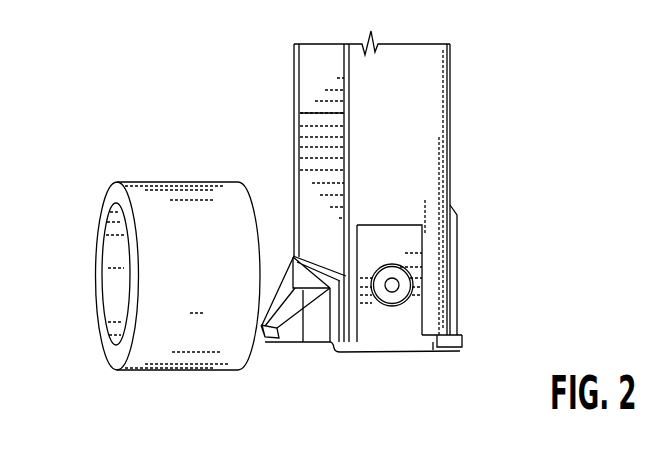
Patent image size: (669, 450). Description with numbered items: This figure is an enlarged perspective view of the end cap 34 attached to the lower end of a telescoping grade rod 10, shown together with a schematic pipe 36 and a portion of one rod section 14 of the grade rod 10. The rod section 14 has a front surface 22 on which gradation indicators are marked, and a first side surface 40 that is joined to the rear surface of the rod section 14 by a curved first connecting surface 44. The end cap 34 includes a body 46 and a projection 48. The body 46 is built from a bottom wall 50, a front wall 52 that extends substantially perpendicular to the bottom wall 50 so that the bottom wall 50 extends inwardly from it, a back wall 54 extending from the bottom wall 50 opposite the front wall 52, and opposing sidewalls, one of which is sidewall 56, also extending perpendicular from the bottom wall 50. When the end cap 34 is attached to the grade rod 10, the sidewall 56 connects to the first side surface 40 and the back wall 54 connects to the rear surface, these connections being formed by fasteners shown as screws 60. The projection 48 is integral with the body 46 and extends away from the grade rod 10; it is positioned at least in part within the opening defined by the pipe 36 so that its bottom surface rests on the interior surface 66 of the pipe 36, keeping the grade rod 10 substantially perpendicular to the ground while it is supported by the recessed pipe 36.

The telescoping grade rod 10 is at (473, 65).
The rod section 14 is at (452, 156).
The front surface 22 is at (315, 120).
The end cap 34 is at (411, 359).
The schematic pipe 36 is at (94, 311).
The first side surface 40 is at (375, 180).
The first connecting surface 44 is at (439, 246).
The body 46 is at (464, 335).
The projection 48 is at (283, 342).
The bottom wall 50 is at (433, 350).
The front wall 52 is at (331, 329).
The back wall 54 is at (453, 283).
The sidewall 56 is at (414, 313).
The screw 60 is at (389, 297).
The interior surface 66 is at (112, 270).